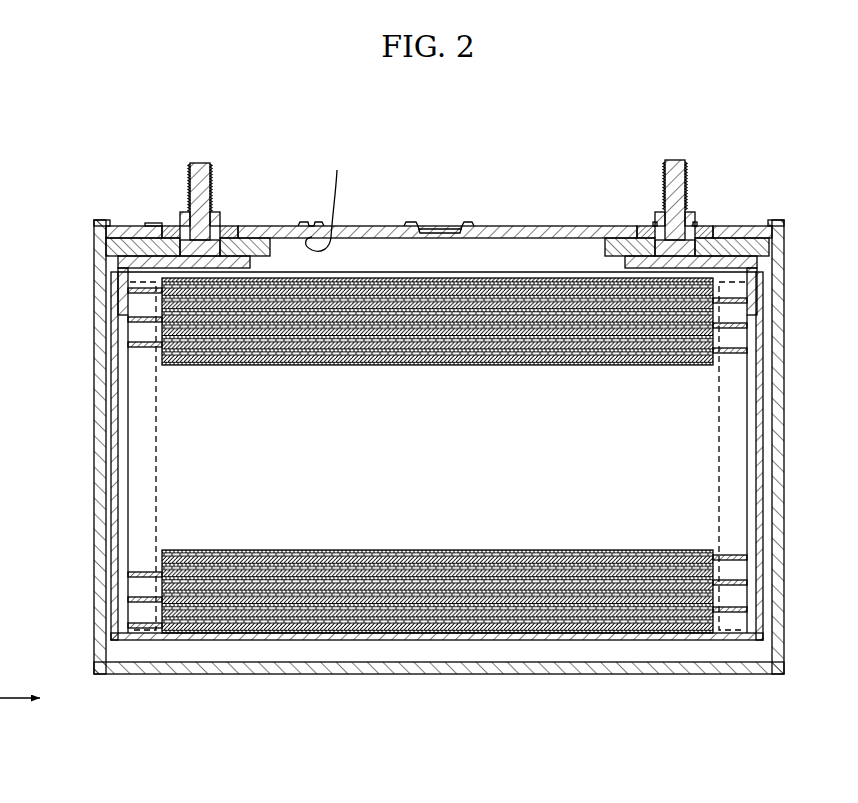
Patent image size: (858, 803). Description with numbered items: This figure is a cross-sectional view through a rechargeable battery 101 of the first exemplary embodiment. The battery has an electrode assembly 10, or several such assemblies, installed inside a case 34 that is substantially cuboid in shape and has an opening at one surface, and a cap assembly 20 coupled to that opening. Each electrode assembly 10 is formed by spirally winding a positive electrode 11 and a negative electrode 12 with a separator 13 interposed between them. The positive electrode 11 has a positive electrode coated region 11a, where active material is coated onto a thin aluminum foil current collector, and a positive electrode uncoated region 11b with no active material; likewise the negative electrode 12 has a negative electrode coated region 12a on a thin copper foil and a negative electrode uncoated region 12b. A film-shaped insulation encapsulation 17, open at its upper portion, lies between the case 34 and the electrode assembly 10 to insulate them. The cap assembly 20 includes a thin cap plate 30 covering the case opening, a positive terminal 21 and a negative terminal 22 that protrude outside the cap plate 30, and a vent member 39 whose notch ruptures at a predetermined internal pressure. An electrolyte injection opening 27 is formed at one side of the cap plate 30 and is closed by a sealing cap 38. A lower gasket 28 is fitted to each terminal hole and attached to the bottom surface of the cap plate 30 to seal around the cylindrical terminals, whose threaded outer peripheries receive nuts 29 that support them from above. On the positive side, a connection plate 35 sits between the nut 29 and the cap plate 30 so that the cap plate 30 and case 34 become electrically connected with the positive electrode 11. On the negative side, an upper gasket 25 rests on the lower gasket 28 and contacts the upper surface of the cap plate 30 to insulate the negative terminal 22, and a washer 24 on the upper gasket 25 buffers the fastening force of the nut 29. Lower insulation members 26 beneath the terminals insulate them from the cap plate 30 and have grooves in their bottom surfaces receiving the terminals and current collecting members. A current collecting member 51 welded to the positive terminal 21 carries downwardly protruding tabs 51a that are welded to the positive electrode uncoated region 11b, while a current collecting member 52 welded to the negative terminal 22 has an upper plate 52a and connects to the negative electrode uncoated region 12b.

The rechargeable battery 101 is at (421, 101).
The electrode assembly 10 is at (441, 524).
The positive electrode 11 is at (171, 529).
The positive electrode coated region 11a is at (197, 630).
The positive electrode uncoated region 11b is at (143, 628).
The negative electrode 12 is at (708, 532).
The negative electrode coated region 12a is at (675, 612).
The negative electrode uncoated region 12b is at (737, 612).
The separator 13 is at (440, 603).
The insulation encapsulation 17 is at (779, 468).
The cap assembly 20 is at (255, 222).
The positive terminal 21 is at (200, 166).
The negative terminal 22 is at (667, 172).
The washer 24 is at (655, 222).
The upper gasket 25 is at (700, 226).
The lower insulation members 26 is at (118, 252).
The electrolyte injection opening 27 is at (327, 198).
The lower gasket 28 is at (166, 230).
The nuts 29 is at (183, 213).
The cap plate 30 is at (488, 226).
The case 34 is at (765, 381).
The connection plate 35 is at (172, 232).
The sealing cap 38 is at (312, 222).
The vent member 39 is at (441, 222).
The current collecting member 51 is at (112, 273).
The tabs 51a is at (138, 358).
The current collecting member 52 is at (763, 272).
The upper plate 52a is at (736, 335).